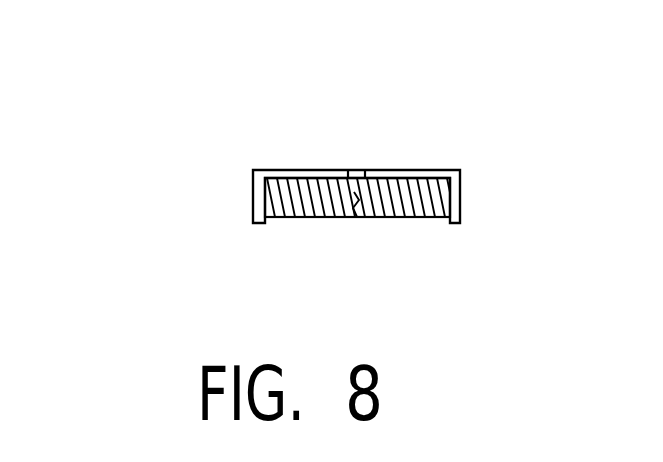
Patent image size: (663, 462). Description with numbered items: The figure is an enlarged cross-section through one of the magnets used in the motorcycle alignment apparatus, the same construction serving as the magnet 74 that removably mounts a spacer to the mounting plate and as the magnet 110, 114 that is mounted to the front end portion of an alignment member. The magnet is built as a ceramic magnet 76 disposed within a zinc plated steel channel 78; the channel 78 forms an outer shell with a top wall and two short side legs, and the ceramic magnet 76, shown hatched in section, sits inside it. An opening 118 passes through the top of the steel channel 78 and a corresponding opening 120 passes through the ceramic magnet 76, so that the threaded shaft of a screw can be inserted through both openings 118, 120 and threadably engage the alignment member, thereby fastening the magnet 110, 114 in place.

The magnet 74 is at (181, 110).
The magnet 110 is at (337, 174).
The magnet 114 is at (378, 174).
The zinc plated steel channel 78 is at (443, 169).
The ceramic magnet 76 is at (403, 219).
The opening 118 is at (358, 176).
The opening 120 is at (357, 217).